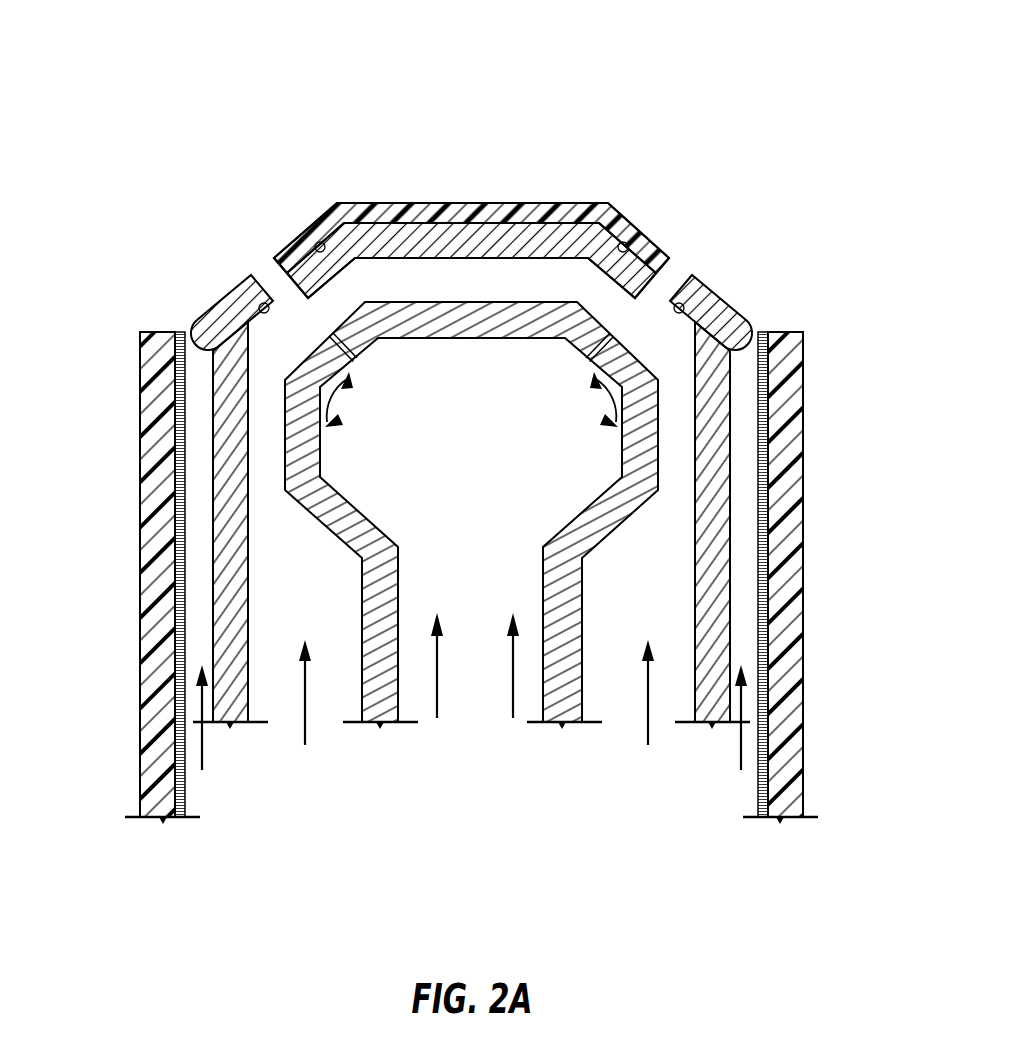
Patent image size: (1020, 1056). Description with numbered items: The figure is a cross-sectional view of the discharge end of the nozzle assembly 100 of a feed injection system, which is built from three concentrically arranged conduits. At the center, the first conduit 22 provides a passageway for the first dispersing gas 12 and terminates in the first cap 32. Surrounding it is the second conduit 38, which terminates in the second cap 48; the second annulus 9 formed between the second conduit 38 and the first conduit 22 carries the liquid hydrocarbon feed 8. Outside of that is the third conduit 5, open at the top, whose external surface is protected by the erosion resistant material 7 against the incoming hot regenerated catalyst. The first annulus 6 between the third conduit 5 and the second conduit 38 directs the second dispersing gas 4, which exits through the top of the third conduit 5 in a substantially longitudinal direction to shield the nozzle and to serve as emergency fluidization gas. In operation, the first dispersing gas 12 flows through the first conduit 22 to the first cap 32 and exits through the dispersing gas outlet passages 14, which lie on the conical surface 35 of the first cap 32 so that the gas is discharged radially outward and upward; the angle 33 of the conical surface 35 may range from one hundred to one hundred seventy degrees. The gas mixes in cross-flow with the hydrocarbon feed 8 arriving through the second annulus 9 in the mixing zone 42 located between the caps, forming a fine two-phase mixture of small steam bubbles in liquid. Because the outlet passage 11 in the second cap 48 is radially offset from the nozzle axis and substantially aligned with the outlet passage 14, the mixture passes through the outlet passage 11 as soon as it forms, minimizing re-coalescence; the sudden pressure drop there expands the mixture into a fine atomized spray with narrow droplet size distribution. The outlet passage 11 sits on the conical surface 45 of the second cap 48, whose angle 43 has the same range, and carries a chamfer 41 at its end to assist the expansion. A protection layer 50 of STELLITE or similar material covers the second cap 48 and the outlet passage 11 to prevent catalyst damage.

The nozzle assembly 100 is at (772, 137).
The second dispersing gas 4 is at (193, 722).
The third conduit 5 is at (185, 772).
The first annulus 6 is at (200, 545).
The erosion resistant material 7 is at (157, 727).
The liquid hydrocarbon feed 8 is at (473, 716).
The second annulus 9 is at (290, 602).
The outlet passage 11 is at (262, 270).
The first dispersing gas 12 is at (475, 693).
The dispersing gas outlet passage 14 is at (349, 355).
The first conduit 22 is at (288, 470).
The first cap 32 is at (443, 323).
The angle of the conical surface 33 is at (350, 403).
The conical surface 35 is at (282, 350).
The second conduit 38 is at (210, 417).
The chamfer 41 is at (262, 298).
The mixing zone 42 is at (350, 283).
The angle of the conical surface 43 is at (742, 328).
The conical surface 45 is at (627, 243).
The second cap 48 is at (403, 242).
The protection layer 50 is at (543, 212).